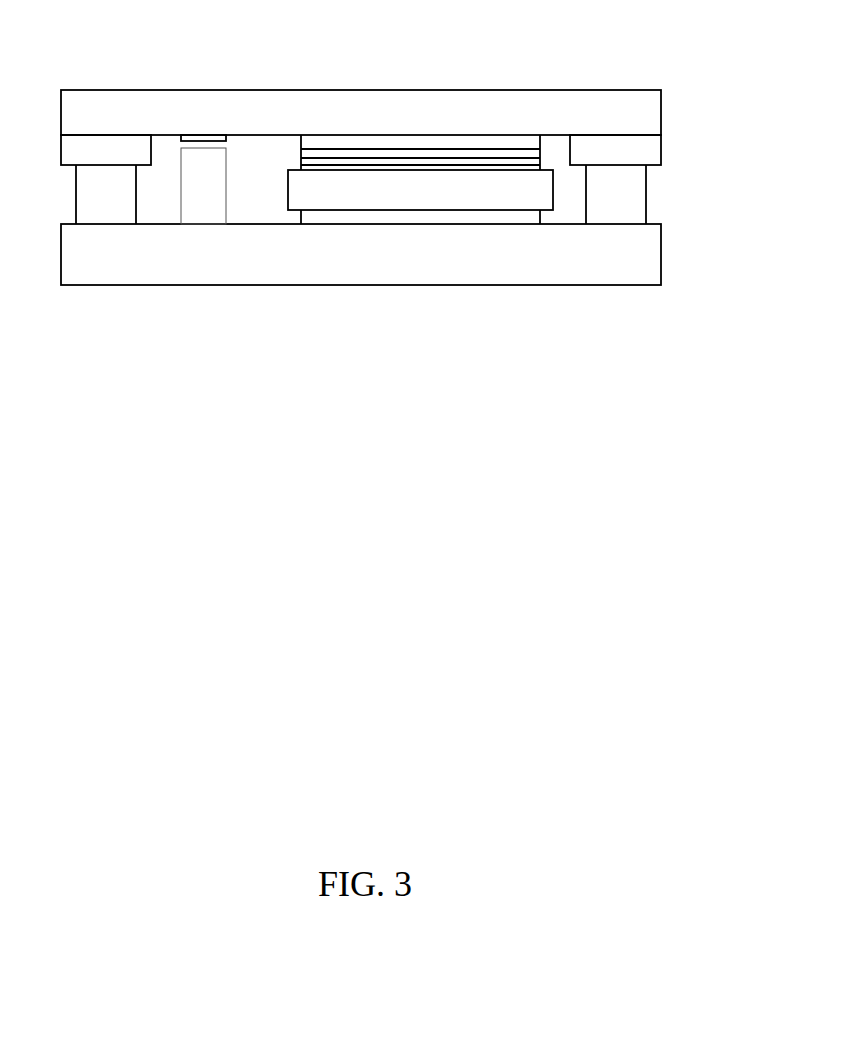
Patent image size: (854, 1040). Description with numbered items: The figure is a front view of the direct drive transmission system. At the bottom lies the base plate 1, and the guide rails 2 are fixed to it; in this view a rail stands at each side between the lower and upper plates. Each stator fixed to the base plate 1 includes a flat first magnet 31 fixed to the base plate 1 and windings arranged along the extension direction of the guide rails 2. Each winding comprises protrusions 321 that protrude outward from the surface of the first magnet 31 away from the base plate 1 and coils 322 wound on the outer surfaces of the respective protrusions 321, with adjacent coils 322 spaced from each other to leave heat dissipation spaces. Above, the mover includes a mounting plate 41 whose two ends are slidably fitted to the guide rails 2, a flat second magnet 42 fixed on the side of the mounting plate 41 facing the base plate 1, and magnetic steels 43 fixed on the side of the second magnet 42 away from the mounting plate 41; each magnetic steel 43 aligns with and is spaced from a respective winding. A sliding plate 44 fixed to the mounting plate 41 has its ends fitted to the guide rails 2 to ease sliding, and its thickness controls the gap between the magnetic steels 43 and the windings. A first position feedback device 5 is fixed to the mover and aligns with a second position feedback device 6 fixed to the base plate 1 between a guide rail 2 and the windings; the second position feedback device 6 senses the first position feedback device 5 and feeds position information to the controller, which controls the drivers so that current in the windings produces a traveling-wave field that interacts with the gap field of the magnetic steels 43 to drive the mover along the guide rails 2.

The base plate 1 is at (103, 270).
The guide rail 2 is at (635, 195).
The first position feedback device 5 is at (202, 138).
The second position feedback device 6 is at (210, 213).
The first magnet 31 is at (360, 215).
The protrusion 321 is at (440, 168).
The coil 322 is at (518, 193).
The mounting plate 41 is at (92, 104).
The second magnet 42 is at (499, 143).
The magnetic steel 43 is at (340, 156).
The sliding plate 44 is at (614, 143).